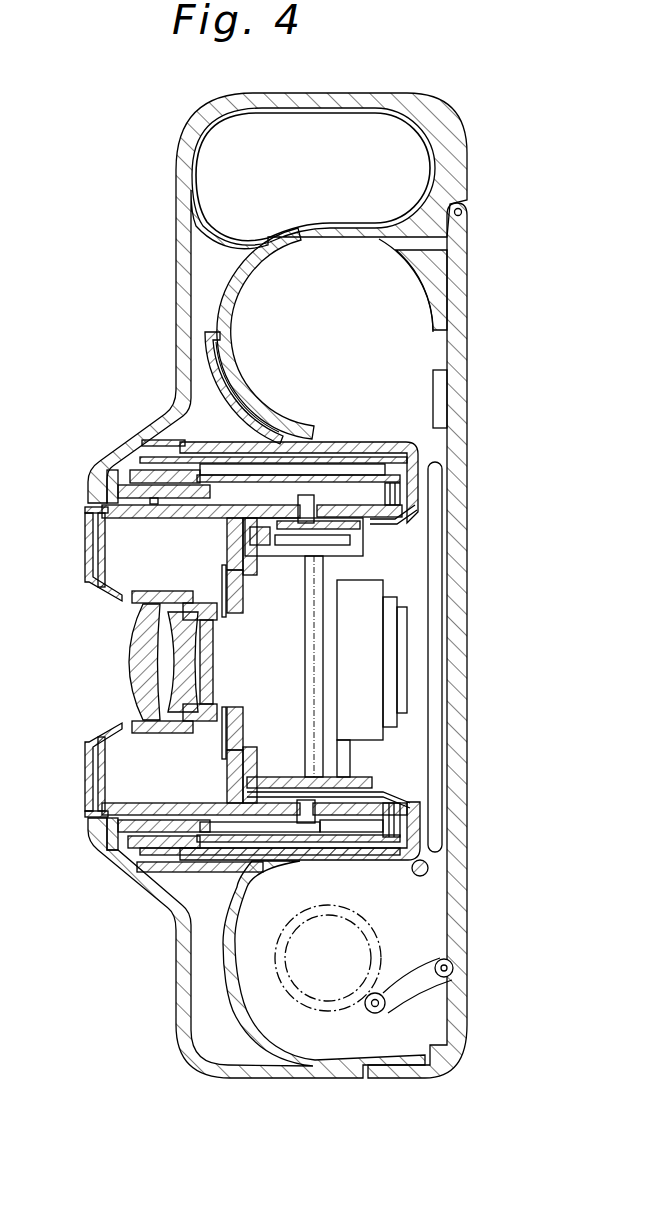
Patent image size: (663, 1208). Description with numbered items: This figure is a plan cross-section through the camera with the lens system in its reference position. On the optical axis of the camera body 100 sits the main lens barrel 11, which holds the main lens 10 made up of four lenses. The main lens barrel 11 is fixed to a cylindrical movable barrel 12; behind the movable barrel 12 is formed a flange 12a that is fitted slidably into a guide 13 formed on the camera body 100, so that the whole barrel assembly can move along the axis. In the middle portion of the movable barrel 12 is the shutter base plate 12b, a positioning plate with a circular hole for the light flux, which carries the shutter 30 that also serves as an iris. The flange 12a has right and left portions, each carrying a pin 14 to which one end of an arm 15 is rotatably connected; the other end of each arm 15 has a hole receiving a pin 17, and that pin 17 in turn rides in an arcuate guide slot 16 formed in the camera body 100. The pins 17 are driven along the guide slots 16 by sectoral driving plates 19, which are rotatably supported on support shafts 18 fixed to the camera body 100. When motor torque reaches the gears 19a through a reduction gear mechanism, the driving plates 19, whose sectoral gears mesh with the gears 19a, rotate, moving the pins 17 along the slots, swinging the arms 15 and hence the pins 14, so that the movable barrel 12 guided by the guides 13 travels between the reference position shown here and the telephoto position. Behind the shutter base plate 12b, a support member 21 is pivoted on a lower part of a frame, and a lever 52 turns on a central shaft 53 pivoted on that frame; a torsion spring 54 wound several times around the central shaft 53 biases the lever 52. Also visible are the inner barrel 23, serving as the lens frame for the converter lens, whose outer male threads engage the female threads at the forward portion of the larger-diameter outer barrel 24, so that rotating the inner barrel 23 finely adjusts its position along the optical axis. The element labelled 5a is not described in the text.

The camera body 100 is at (498, 475).
The main lens 10 is at (190, 664).
The main lens barrel 11 is at (133, 594).
The movable barrel 12 is at (186, 518).
The flange 12a is at (290, 550).
The shutter base plate 12b is at (240, 605).
The guide 13 is at (152, 503).
The pin 14 is at (295, 468).
The arm 15 is at (373, 512).
The arcuate guide slot 16 is at (364, 490).
The pin 17 is at (394, 483).
The support shaft 18 is at (318, 470).
The driving plate 19 is at (258, 478).
The gear 19a is at (172, 482).
The support member 21 is at (353, 728).
The inner barrel 23 is at (401, 608).
The outer barrel 24 is at (387, 668).
The shutter 30 is at (222, 578).
The lever 52 is at (298, 540).
The central shaft 53 is at (320, 540).
The torsion spring 54 is at (335, 533).
The support plate 5a is at (363, 777).